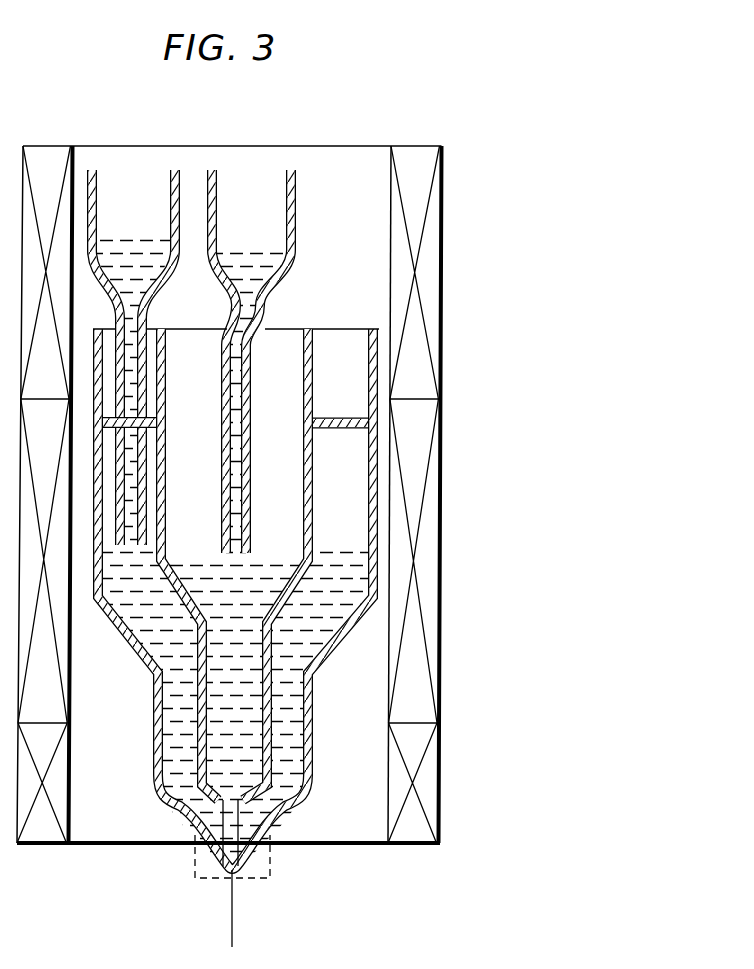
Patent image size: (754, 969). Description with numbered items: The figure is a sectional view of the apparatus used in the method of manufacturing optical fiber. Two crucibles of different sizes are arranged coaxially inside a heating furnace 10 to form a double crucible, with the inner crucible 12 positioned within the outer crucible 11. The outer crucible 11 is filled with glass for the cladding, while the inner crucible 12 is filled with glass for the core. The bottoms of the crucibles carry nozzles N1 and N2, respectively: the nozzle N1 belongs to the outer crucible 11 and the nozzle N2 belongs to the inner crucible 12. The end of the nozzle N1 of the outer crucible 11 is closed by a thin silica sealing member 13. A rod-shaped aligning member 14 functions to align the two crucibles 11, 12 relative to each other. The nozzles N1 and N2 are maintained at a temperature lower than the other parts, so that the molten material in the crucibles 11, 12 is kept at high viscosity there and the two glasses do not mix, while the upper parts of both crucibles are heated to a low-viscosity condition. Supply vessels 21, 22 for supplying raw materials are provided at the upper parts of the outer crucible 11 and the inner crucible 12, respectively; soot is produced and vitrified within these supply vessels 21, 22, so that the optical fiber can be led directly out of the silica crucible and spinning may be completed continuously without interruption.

The heating furnace 10 is at (438, 331).
The outer crucible 11 is at (375, 490).
The inner crucible 12 is at (310, 529).
The sealing member 13 is at (267, 882).
The aligning member 14 is at (343, 417).
The supply vessel 21 is at (150, 171).
The supply vessel 22 is at (247, 171).
The nozzle N1 is at (290, 813).
The nozzle N2 is at (210, 790).